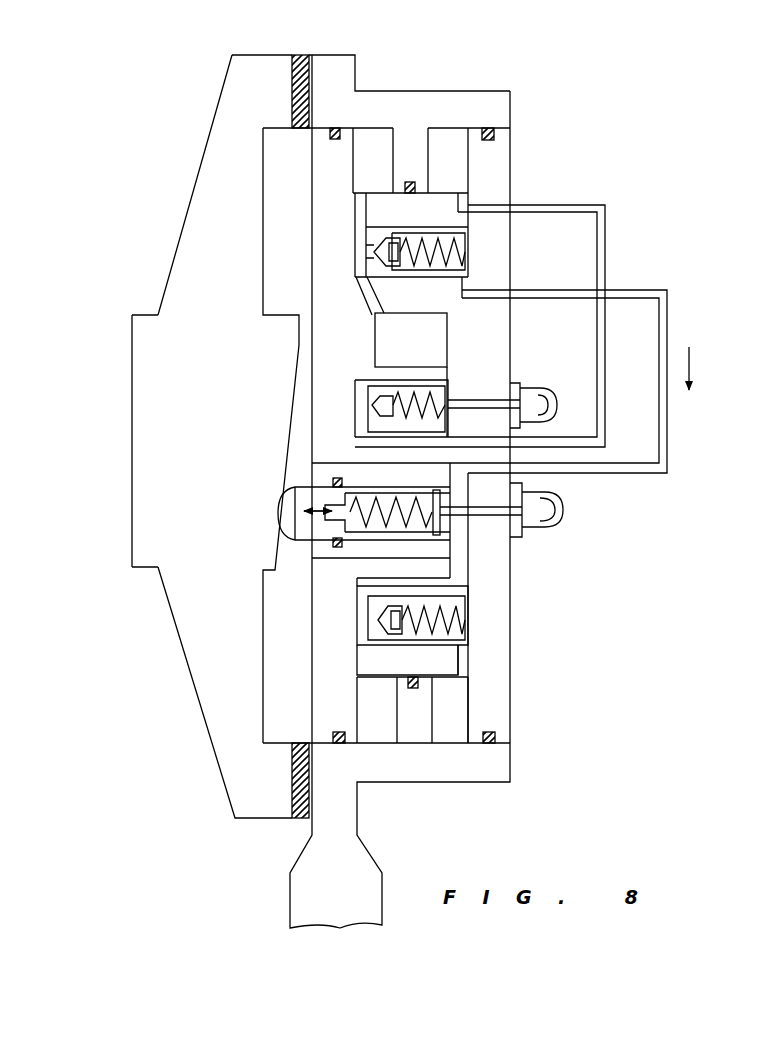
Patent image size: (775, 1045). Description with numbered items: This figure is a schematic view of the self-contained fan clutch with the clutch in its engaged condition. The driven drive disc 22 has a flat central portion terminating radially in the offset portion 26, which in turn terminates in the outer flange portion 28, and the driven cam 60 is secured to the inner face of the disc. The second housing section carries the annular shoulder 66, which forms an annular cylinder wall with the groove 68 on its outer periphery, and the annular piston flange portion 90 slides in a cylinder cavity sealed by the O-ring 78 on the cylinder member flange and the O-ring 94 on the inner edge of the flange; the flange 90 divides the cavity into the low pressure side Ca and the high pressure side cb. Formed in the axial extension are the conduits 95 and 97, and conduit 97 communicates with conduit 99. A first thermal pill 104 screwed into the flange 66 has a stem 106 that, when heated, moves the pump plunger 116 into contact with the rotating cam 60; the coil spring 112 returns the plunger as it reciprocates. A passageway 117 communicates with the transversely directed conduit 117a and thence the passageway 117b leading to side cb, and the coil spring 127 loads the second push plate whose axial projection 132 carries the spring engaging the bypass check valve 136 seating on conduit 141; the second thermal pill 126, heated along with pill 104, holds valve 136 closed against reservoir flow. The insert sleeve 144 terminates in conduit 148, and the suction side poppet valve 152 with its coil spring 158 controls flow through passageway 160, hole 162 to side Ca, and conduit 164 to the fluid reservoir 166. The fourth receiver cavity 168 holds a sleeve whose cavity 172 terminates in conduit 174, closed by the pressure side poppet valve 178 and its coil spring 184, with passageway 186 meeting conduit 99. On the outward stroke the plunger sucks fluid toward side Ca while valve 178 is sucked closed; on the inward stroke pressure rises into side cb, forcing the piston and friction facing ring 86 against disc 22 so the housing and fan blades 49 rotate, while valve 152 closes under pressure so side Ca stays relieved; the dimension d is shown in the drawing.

The driven drive disc 22 is at (183, 208).
The offset portion 26 is at (238, 742).
The outer flange portion 28 is at (250, 78).
The fan blades 49 is at (312, 902).
The driven cam 60 is at (297, 375).
The annular shoulder 66 is at (492, 683).
The groove 68 is at (505, 742).
The O-ring 78 is at (340, 745).
The friction facing ring 86 is at (300, 55).
The annular piston flange portion 90 is at (410, 138).
The O-ring 94 is at (420, 685).
The conduit 95 is at (655, 300).
The conduit 97 is at (650, 462).
The conduit 99 is at (462, 589).
The first thermal pill 104 is at (565, 500).
The stem 106 is at (497, 508).
The coil spring 112 is at (395, 505).
The pump plunger 116 is at (300, 515).
The passageway 117 is at (370, 393).
The transversely directed conduit 117a is at (450, 372).
The passageway 117b is at (606, 256).
The second thermal pill 126 is at (560, 400).
The coil spring 127 is at (440, 405).
The axial projection 132 is at (470, 396).
The thermally controlled bypass check valve 136 is at (370, 408).
The conduit 141 is at (370, 382).
The insert sleeve 144 is at (368, 275).
The conduit 148 is at (370, 242).
The suction side poppet valve 152 is at (397, 243).
The coil spring 158 is at (462, 248).
The passageway 160 is at (363, 232).
The hole 162 is at (362, 203).
The conduit 164 is at (356, 290).
The fluid reservoir 166 is at (420, 342).
The fourth receiver cavity 168 is at (460, 643).
The cavity 172 is at (360, 598).
The conduit 174 is at (380, 622).
The pressure side poppet valve 178 is at (395, 633).
The coil spring 184 is at (468, 615).
The passageway 186 is at (372, 615).
The low pressure side Ca is at (372, 143).
The high pressure side cb is at (452, 143).
The passage d is at (460, 559).